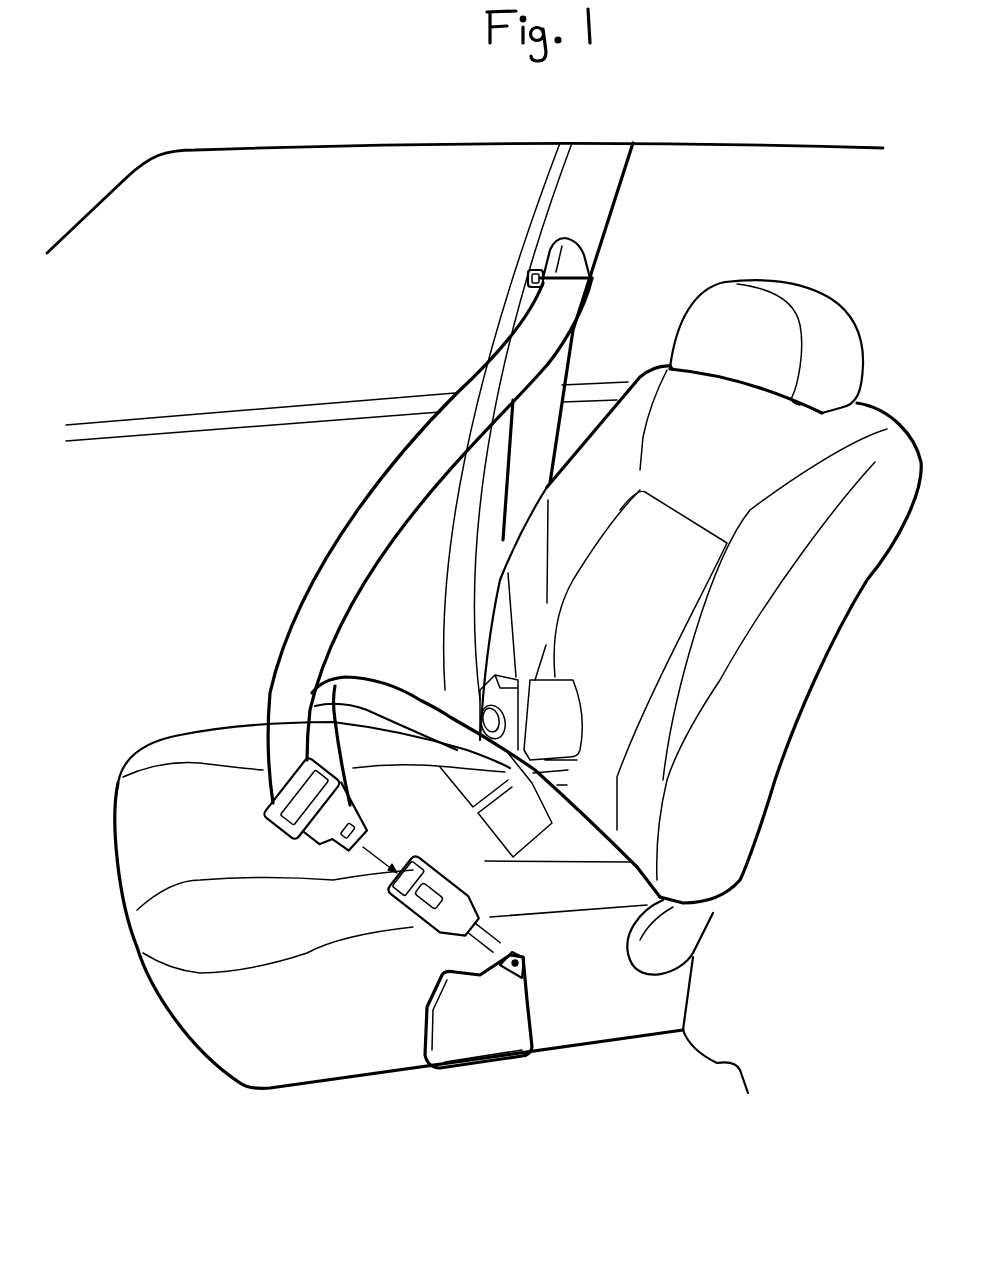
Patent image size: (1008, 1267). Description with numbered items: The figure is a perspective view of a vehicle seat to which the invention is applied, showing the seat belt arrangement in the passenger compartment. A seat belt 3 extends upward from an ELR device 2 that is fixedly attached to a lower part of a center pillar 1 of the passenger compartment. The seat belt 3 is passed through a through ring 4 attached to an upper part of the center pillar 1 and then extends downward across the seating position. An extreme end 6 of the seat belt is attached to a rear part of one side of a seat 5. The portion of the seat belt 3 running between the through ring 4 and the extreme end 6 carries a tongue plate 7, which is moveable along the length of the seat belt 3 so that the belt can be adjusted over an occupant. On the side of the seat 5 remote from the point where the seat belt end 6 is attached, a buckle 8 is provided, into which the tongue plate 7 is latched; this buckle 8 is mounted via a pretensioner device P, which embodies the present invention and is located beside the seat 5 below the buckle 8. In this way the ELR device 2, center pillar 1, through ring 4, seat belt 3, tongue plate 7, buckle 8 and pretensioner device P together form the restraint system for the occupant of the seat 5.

The center pillar 1 is at (490, 513).
The ELR device 2 is at (573, 700).
The seat belt 3 is at (560, 373).
The through ring 4 is at (590, 280).
The seat 5 is at (233, 727).
The extreme end 6 is at (507, 827).
The tongue plate 7 is at (290, 843).
The buckle 8 is at (432, 925).
The pretensioner device P is at (512, 1069).